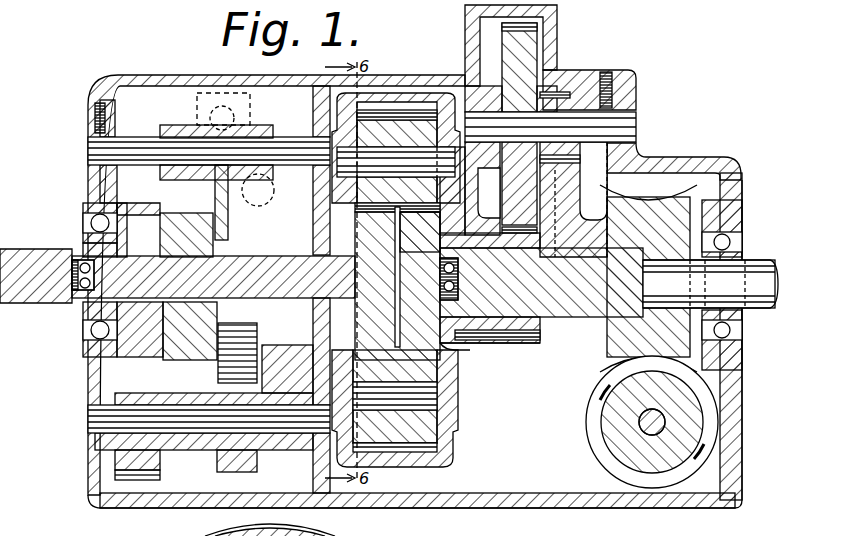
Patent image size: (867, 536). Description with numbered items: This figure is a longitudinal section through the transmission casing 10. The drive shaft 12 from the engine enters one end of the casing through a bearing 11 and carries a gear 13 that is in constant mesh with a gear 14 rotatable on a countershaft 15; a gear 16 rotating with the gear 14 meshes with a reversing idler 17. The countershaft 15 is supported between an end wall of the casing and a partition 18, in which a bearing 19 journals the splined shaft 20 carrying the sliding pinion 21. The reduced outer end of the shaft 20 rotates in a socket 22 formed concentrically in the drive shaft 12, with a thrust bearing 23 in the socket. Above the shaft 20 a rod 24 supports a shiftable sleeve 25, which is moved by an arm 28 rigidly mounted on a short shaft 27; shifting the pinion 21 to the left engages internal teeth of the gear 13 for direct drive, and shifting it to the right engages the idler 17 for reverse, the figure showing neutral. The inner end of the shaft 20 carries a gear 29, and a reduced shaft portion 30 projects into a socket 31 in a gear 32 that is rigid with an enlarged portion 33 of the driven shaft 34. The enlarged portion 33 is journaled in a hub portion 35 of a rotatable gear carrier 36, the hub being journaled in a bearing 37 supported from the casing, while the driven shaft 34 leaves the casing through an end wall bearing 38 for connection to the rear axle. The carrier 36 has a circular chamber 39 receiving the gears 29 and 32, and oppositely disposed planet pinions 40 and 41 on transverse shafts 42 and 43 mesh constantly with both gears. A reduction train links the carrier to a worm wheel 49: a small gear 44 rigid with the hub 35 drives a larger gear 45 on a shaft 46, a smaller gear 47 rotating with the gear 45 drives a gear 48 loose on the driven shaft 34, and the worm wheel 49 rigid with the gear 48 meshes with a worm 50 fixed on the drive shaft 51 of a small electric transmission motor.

The transmission casing 10 is at (170, 75).
The bearing 11 is at (88, 222).
The drive shaft 12 is at (46, 304).
The gear 13 is at (98, 203).
The gear 14 is at (140, 481).
The countershaft 15 is at (90, 420).
The gear 16 is at (220, 458).
The reversing idler 17 is at (257, 355).
The partition 18 is at (300, 365).
The bearing 19 is at (300, 242).
The splined shaft 20 is at (262, 256).
The sliding pinion 21 is at (187, 342).
The socket 22 is at (95, 300).
The thrust bearing 23 is at (76, 266).
The rod 24 is at (135, 140).
The sleeve 25 is at (196, 128).
The short shaft 27 is at (275, 188).
The arm 28 is at (252, 116).
The gear 29 is at (397, 283).
The reduced shaft portion 30 is at (440, 280).
The socket 31 is at (458, 352).
The gear 32 is at (420, 232).
The enlarged portion 33 is at (500, 318).
The driven shaft 34 is at (710, 284).
The hub portion 35 is at (488, 341).
The gear carrier 36 is at (393, 95).
The bearing 37 is at (462, 343).
The end wall bearing 38 is at (745, 254).
The circular chamber 39 is at (425, 112).
The planet pinion 40 is at (397, 161).
The planet pinion 41 is at (395, 408).
The shaft 42 is at (396, 162).
The shaft 43 is at (395, 396).
The small gear 44 is at (535, 360).
The larger gear 45 is at (522, 95).
The shaft 46 is at (622, 131).
The smaller gear 47 is at (606, 72).
The gear 48 is at (640, 212).
The worm wheel 49 is at (665, 200).
The worm 50 is at (640, 452).
The drive shaft 51 is at (654, 436).